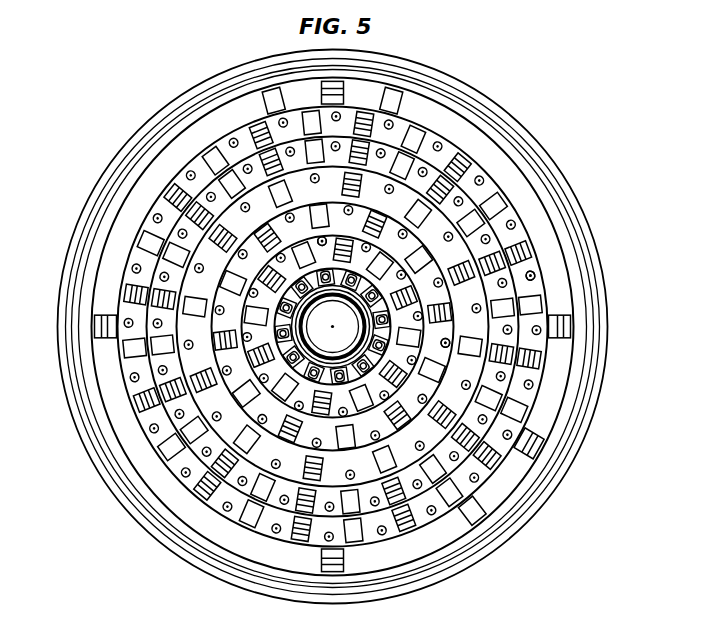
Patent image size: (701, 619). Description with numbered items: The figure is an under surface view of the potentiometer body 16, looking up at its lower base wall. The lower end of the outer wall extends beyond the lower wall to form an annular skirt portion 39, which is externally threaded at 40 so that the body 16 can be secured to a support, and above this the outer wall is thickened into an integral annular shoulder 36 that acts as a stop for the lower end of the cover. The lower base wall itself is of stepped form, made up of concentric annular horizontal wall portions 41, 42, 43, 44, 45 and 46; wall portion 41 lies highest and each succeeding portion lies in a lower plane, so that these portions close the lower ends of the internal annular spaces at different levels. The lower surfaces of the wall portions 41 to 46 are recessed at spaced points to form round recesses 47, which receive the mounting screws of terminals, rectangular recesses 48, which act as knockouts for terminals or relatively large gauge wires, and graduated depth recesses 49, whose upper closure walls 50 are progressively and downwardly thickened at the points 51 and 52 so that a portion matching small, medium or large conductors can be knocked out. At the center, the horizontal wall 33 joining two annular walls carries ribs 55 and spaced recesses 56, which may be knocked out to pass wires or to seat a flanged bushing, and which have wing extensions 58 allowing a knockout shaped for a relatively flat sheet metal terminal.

The body 16 is at (541, 512).
The horizontal wall 33 is at (347, 300).
The annular shoulder 36 is at (605, 408).
The annular skirt portion 39 is at (590, 367).
The external thread 40 is at (597, 385).
The annular horizontal wall portion 41 is at (472, 140).
The annular horizontal wall portion 42 is at (497, 155).
The annular horizontal wall portion 43 is at (519, 167).
The annular horizontal wall portion 44 is at (438, 226).
The annular horizontal wall portion 45 is at (440, 297).
The annular horizontal wall portion 46 is at (447, 352).
The round recess 47 is at (536, 274).
The rectangular recess 48 is at (545, 207).
The graduated depth recess 49 is at (572, 319).
The upper closure wall 50 is at (572, 333).
The thickened point 51 is at (532, 462).
The thickened point 52 is at (522, 470).
The rib 55 is at (318, 241).
The spaced recess 56 is at (335, 372).
The wing extension 58 is at (360, 290).